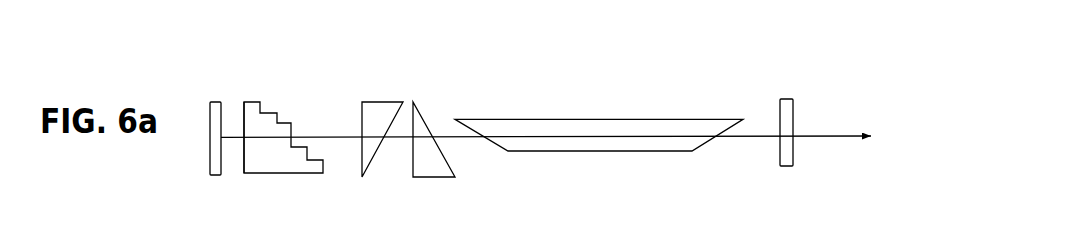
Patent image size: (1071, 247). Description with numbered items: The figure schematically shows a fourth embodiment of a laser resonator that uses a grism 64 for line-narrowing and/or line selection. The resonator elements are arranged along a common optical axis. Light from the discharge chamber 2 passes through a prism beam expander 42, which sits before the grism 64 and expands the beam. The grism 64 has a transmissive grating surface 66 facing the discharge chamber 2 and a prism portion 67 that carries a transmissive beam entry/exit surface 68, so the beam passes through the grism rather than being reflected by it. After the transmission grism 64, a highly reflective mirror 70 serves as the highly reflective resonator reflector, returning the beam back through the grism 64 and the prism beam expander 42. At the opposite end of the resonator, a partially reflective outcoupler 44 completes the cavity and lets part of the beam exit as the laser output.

The laser slab / gain medium 2 is at (618, 110).
The prism beam expander 42 is at (404, 83).
The partially reflective outcoupler 44 is at (772, 112).
The grism 64 is at (266, 126).
The transmissive grating surface 66 is at (279, 125).
The prism portion 67 is at (282, 156).
The transmissive beam entry/exit surface 68 is at (242, 157).
The highly reflective mirror 70 is at (224, 122).